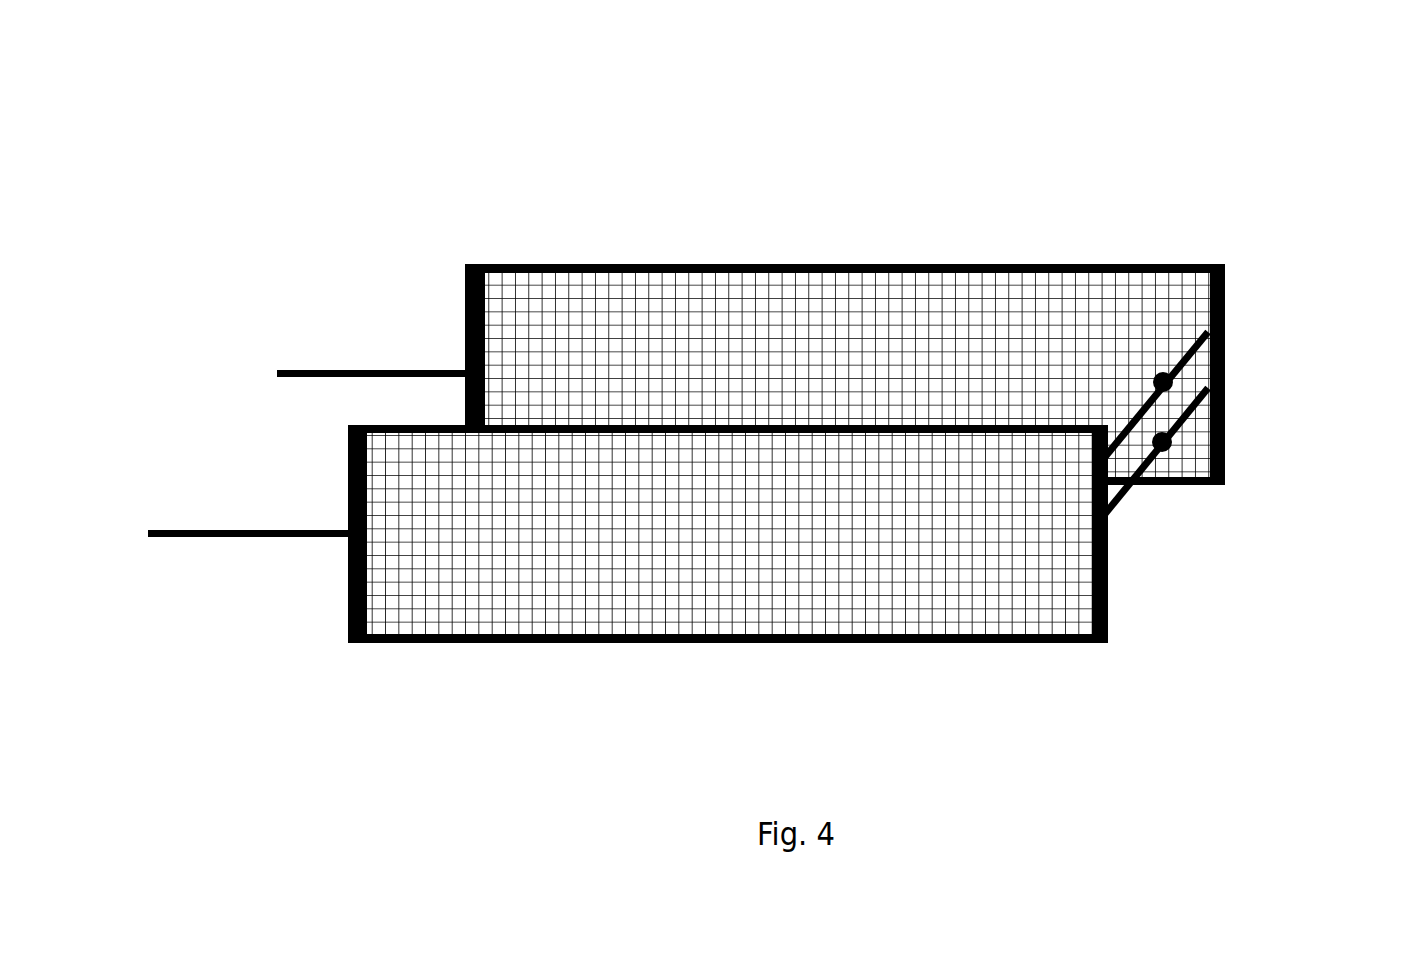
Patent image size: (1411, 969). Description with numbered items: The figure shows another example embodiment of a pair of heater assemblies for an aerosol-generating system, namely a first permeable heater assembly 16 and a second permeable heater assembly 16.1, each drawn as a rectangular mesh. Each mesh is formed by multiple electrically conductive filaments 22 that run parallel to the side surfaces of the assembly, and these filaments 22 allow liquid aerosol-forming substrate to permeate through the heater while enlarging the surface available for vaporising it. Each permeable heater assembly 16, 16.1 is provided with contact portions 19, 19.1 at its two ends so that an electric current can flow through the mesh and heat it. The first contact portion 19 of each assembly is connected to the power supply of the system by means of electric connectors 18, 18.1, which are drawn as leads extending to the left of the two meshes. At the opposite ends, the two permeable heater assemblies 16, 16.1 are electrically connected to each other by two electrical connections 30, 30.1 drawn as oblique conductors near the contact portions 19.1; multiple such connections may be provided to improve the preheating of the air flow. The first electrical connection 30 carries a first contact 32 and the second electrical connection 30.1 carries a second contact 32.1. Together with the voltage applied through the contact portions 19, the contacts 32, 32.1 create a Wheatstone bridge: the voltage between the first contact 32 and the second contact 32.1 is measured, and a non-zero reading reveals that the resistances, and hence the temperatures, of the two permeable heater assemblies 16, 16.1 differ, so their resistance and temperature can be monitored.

The first permeable heater assembly 16 is at (448, 647).
The second permeable heater assembly 16.1 is at (588, 263).
The electric connector 18 is at (233, 530).
The electric connector 18.1 is at (350, 370).
The first contact portion 19 is at (463, 285).
The contact portion 19.1 is at (1227, 312).
The electrically conductive filaments 22 is at (712, 313).
The first electrical connection 30 is at (1122, 498).
The second electrical connection 30.1 is at (1192, 357).
The first contact 32 is at (1168, 483).
The second contact 32.1 is at (1163, 372).